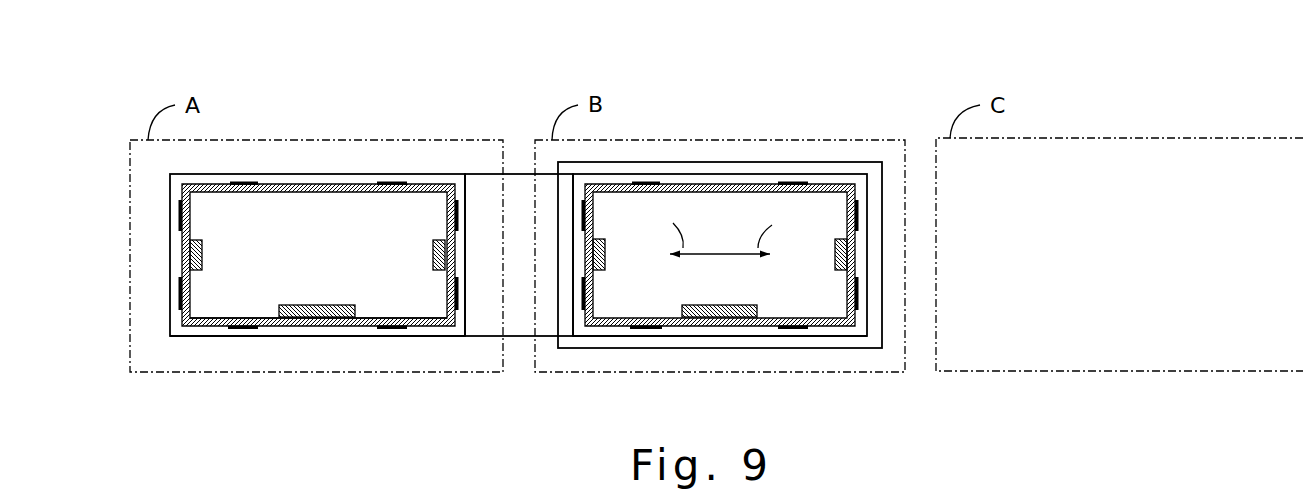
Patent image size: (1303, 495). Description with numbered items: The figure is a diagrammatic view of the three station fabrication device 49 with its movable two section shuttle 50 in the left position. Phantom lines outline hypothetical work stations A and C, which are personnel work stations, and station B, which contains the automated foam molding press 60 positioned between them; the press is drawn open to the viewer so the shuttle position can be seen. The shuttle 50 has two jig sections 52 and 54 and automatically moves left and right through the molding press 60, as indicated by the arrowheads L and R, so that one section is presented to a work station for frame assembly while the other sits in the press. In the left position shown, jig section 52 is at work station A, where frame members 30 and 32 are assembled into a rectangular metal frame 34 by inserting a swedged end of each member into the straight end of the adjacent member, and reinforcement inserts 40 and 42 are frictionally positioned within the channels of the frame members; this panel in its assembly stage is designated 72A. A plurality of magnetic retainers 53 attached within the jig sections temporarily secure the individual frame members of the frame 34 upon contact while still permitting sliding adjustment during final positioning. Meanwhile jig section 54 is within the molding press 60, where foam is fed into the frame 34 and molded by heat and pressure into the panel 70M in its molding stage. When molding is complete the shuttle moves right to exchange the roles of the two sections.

The frame member 30 is at (185, 240).
The frame member 32 is at (283, 327).
The metal frame 34 is at (211, 340).
The reinforcement insert 40 is at (327, 317).
The reinforcement insert 42 is at (185, 265).
The fabrication device 49 is at (674, 108).
The shuttle 50 is at (520, 165).
The jig section 52 is at (200, 173).
The magnetic retainers 53 is at (245, 185).
The jig section 54 is at (685, 173).
The automated foam molding press 60 is at (793, 155).
The panel in molding stage 70M is at (733, 237).
The panel in assembly stage 72A is at (335, 268).